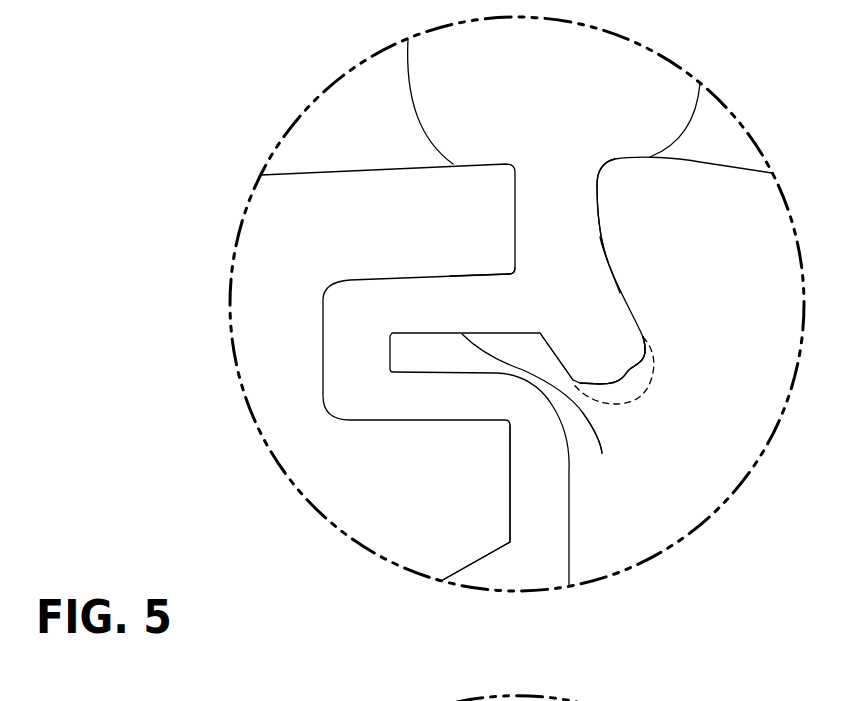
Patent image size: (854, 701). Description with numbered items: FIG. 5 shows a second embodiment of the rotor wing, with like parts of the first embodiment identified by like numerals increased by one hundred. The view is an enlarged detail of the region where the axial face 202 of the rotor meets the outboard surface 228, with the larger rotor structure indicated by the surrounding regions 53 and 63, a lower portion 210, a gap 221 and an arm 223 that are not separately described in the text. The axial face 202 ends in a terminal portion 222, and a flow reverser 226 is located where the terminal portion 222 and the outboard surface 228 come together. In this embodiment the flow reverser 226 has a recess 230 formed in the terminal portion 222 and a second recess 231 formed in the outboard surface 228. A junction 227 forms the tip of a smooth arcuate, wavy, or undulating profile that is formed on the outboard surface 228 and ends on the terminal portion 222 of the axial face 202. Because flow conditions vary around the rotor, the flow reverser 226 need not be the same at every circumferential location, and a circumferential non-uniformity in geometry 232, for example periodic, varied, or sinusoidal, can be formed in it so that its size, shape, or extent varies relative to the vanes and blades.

The second housing portion 53 is at (720, 150).
The first housing portion 63 is at (365, 143).
The axial face 202 is at (597, 182).
The lower leg of first housing portion 210 is at (508, 487).
The channel 221 is at (528, 290).
The terminal portion 222 is at (600, 233).
The arm of first housing portion 223 is at (514, 272).
The flow reverser 226 is at (615, 361).
The junction 227 is at (540, 334).
The outboard surface 228 is at (546, 408).
The recess 230 is at (643, 357).
The recess 231 is at (600, 387).
The circumferential non-uniformity in geometry 232 is at (650, 387).